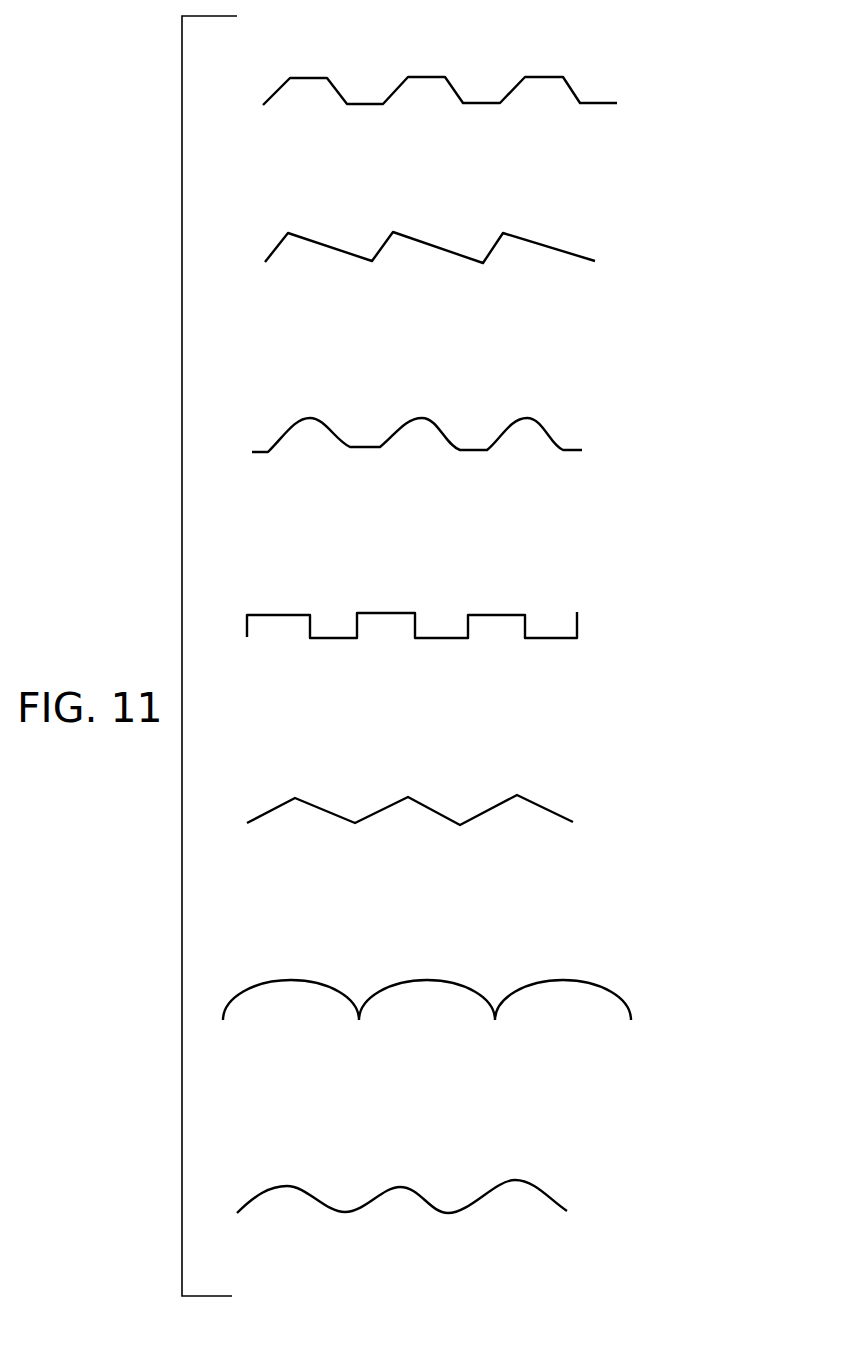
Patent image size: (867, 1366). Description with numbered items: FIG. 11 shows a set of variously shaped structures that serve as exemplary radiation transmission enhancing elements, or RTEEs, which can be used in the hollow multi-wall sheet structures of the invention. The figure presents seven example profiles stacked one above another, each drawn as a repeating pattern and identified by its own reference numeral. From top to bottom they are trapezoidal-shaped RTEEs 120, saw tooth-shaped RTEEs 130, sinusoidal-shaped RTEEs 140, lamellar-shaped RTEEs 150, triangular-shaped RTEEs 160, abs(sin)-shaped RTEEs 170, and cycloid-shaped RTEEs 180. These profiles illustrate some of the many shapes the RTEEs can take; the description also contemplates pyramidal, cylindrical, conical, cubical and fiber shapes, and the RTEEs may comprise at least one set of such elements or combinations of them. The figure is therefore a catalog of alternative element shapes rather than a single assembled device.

The trapezoidal-shaped RTEEs 120 is at (674, 87).
The saw tooth-shaped RTEEs 130 is at (676, 245).
The sinusoidal-shaped RTEEs 140 is at (676, 437).
The lamellar-shaped RTEEs 150 is at (670, 620).
The triangular-shaped RTEEs 160 is at (670, 807).
The abs(sin)-shaped RTEEs 170 is at (668, 997).
The cycloid-shaped RTEEs 180 is at (665, 1187).